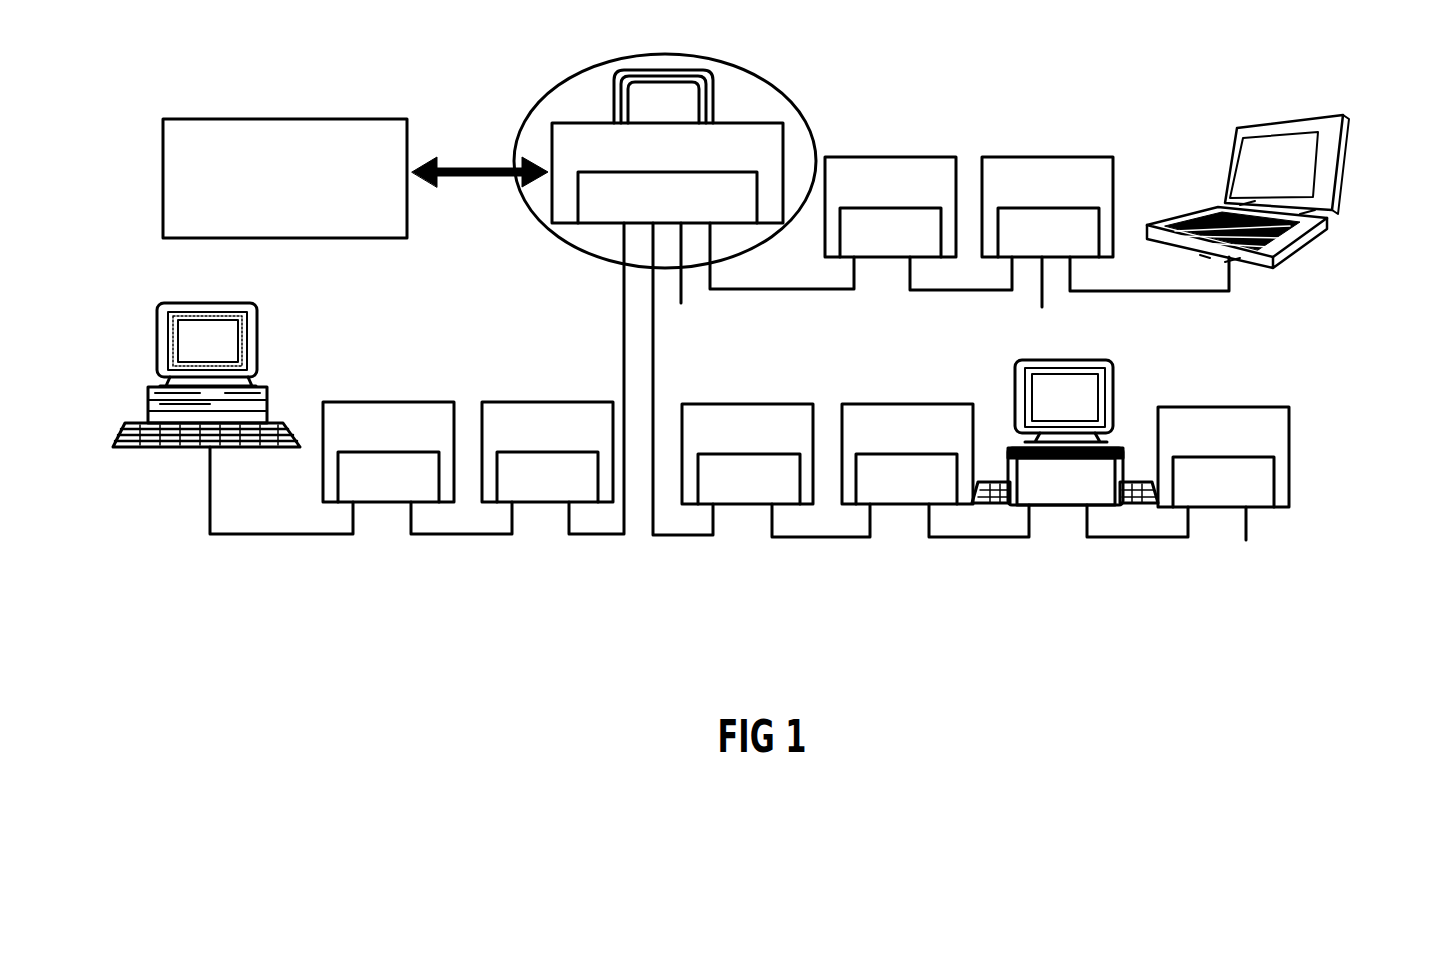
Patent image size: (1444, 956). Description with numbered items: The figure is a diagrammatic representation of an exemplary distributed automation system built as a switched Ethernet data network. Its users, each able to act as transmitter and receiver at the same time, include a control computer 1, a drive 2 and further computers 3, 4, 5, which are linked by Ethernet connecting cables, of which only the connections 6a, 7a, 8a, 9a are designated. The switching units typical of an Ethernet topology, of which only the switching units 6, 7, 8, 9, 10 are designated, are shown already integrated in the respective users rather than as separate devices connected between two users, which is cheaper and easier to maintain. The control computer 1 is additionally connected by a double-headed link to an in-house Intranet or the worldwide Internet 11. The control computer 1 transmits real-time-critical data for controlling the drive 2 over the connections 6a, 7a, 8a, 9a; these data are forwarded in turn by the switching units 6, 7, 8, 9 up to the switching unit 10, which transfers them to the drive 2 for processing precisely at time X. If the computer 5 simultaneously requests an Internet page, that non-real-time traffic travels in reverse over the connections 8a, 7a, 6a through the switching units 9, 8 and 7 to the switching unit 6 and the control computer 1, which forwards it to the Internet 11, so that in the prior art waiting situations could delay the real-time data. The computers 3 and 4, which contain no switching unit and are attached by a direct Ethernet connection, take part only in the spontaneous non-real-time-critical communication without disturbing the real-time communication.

The control computer 1 is at (760, 76).
The drive 2 is at (1266, 487).
The computer 3 is at (1343, 188).
The computer 4 is at (257, 360).
The computer 5 is at (1100, 391).
The switching unit 6 is at (613, 210).
The connection 6a is at (653, 355).
The switching unit 7 is at (748, 484).
The connection 7a is at (819, 537).
The switching unit 8 is at (922, 484).
The connection 8a is at (980, 537).
The switching unit 9 is at (1085, 489).
The connection 9a is at (1140, 537).
The switching unit 10 is at (1235, 492).
The Intranet/Internet 11 is at (393, 152).